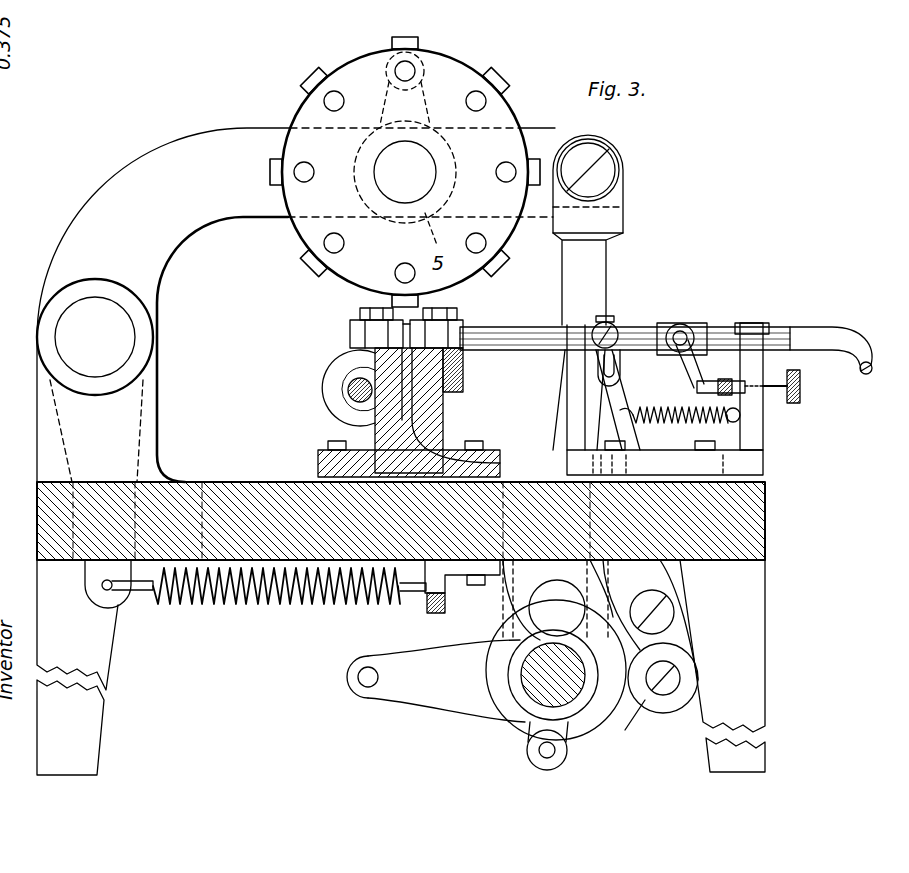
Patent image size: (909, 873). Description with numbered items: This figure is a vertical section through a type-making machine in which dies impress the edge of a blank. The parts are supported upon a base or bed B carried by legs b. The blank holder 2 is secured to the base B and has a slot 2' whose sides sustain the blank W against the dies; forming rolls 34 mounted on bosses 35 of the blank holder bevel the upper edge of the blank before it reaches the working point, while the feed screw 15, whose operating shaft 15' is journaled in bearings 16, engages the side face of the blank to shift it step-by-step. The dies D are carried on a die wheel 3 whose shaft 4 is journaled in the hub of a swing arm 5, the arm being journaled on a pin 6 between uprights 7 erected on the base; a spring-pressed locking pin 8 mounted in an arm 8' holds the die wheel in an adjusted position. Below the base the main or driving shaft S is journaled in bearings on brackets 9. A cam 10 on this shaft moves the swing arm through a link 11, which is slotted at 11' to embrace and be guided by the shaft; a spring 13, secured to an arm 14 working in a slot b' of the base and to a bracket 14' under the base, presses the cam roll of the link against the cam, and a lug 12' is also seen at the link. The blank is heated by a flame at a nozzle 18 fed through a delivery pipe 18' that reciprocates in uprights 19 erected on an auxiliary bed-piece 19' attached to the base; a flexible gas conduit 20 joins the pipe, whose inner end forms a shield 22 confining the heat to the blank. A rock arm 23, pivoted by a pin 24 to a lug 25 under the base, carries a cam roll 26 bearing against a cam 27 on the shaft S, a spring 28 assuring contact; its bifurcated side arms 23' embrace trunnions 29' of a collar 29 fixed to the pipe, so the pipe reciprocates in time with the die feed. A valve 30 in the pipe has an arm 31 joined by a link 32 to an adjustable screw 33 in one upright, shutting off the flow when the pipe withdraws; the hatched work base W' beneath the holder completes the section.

The base or bed B is at (765, 532).
The legs b is at (415, 667).
The slot in base b' is at (209, 470).
The blank holder 2 is at (419, 410).
The slot of blank holder 2' is at (472, 405).
The die wheel 3 is at (300, 243).
The shaft of die wheel 4 is at (405, 172).
The swing arm 5 is at (203, 212).
The pin 6 is at (110, 343).
The uprights 7 is at (142, 420).
The locking pin 8 is at (379, 50).
The arm 8' is at (432, 137).
The brackets 9 is at (515, 575).
The cam 10 is at (495, 657).
The link 11 is at (598, 230).
The slot of link 11' is at (558, 600).
The lug 12' is at (574, 746).
The spring 13 is at (360, 606).
The arm 14 is at (119, 598).
The bracket 14' is at (439, 618).
The feed screw 15 is at (332, 391).
The operating shaft of feed screw 15' is at (333, 374).
The bearings 16 is at (356, 380).
The nozzle 18 is at (625, 359).
The delivery pipe 18' is at (730, 305).
The uprights 19 is at (658, 388).
The auxiliary bed-piece 19' is at (705, 458).
The flexible gas supply conduit 20 is at (850, 342).
The guard or shield 22 is at (352, 330).
The rock arm 23 is at (640, 400).
The side arms 23' is at (560, 400).
The pivot pin 24 is at (660, 614).
The lug 25 is at (675, 572).
The cam roll 26 is at (682, 679).
The cam 27 is at (625, 722).
The spring 28 is at (740, 415).
The collar 29 is at (618, 315).
The trunnions 29' is at (642, 315).
The valve 30 is at (686, 332).
The valve arm 31 is at (748, 325).
The link 32 is at (697, 395).
The adjustable screw 33 is at (800, 388).
The forming rolls 34 is at (400, 332).
The bosses 35 is at (505, 352).
The dies D is at (505, 78).
The main or driving shaft S is at (540, 690).
The blank W is at (297, 383).
The work base W' is at (423, 448).